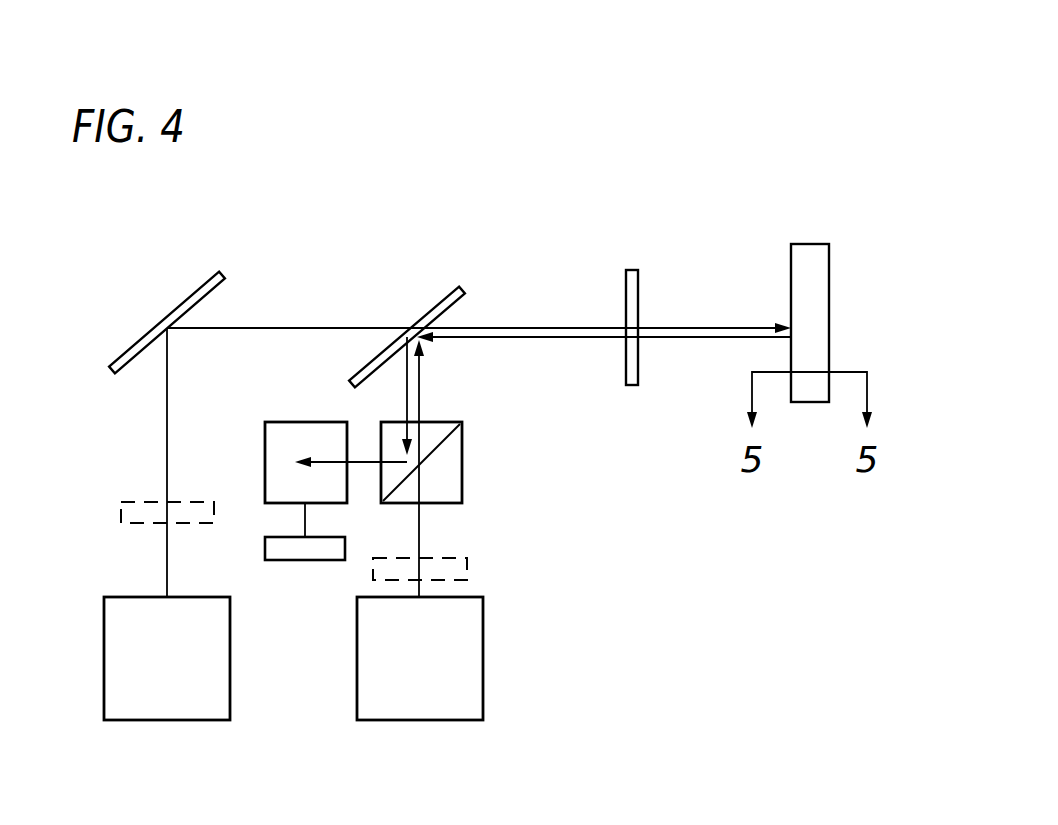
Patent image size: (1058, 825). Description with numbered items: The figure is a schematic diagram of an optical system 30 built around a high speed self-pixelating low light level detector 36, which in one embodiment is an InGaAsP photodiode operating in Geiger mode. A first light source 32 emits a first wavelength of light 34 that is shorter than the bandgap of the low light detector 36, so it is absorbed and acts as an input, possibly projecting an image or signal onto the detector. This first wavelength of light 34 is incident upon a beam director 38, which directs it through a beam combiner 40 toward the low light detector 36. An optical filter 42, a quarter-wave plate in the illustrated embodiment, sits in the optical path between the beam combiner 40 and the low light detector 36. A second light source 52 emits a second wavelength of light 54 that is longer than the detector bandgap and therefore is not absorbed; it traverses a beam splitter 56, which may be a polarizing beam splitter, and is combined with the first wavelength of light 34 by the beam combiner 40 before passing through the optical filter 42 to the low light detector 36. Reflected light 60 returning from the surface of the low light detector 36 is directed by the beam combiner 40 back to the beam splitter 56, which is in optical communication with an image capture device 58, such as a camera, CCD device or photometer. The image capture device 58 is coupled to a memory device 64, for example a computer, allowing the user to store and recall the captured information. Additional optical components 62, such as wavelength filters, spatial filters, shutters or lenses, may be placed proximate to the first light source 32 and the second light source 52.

The optical system 30 is at (772, 108).
The first light source 32 is at (104, 655).
The first wavelength of light 34 is at (167, 441).
The self-pixelating low light level detector 36 is at (807, 243).
The beam director 38 is at (225, 278).
The beam combiner 40 is at (463, 288).
The optical filter 42 is at (638, 285).
The second light source 52 is at (483, 655).
The second wavelength of light 54 is at (582, 327).
The beam splitter 56 is at (462, 478).
The image capture device 58 is at (283, 420).
The reflected light 60 is at (569, 340).
The additional optical components 62 is at (121, 512).
The memory device 64 is at (305, 562).